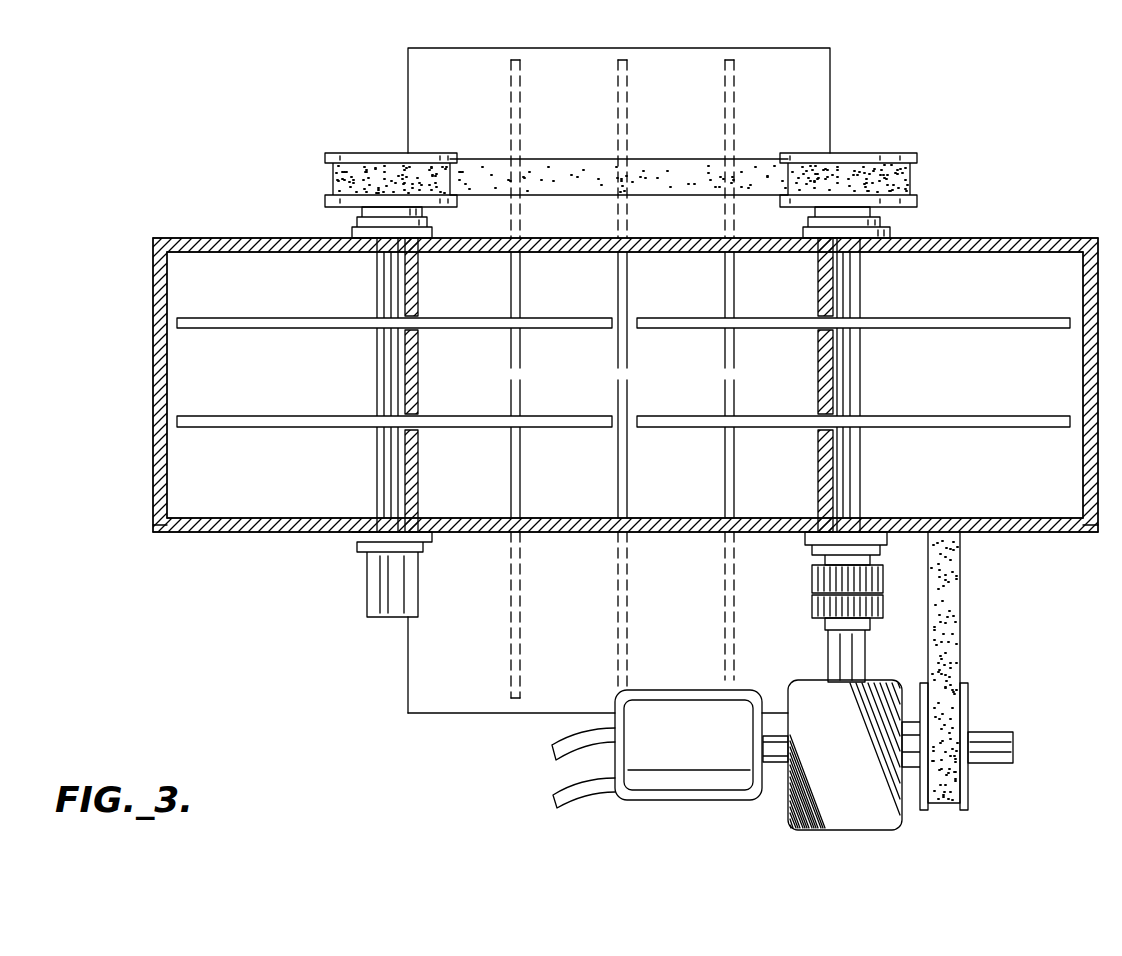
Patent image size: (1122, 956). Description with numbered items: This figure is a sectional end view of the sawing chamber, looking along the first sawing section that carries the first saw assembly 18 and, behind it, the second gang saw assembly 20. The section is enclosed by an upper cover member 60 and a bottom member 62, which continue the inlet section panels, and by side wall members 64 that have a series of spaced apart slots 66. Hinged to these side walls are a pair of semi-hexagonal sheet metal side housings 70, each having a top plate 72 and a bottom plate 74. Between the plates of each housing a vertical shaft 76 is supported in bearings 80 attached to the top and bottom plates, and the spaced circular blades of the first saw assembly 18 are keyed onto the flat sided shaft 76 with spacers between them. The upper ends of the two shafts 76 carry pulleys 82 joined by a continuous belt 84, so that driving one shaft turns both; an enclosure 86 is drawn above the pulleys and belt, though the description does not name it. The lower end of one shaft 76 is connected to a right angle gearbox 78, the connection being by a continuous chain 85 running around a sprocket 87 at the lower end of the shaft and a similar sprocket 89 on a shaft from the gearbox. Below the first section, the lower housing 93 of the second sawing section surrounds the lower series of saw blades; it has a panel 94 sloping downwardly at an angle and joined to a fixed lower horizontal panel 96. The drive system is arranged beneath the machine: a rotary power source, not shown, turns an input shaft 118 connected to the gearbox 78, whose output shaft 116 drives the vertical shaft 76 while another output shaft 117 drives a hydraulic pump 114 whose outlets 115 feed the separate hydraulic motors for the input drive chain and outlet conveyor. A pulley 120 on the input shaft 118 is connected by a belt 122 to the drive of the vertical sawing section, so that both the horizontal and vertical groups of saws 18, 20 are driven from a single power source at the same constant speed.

The first saw assembly 18 is at (995, 332).
The second gang saw assembly 20 is at (692, 372).
The upper cover member 60 is at (548, 253).
The bottom member 62 is at (540, 518).
The side wall members 64 is at (418, 470).
The slots 66 is at (418, 330).
The side housings 70 is at (626, 366).
The top plate 72 is at (1058, 238).
The bottom plate 74 is at (1062, 532).
The vertical shaft 76 is at (862, 375).
The right angle gearbox 78 is at (838, 830).
The bearings 80 is at (890, 232).
The pulleys 82 is at (878, 153).
The continuous belt 84 is at (645, 175).
The continuous chain 85 is at (881, 589).
The belt guard 86 is at (714, 48).
The sprocket 87 is at (812, 582).
The sprocket 89 is at (812, 610).
The lower housing 93 is at (400, 670).
The panel 94 is at (556, 677).
The lower horizontal panel 96 is at (455, 713).
The hydraulic pump 114 is at (650, 800).
The outlets 115 is at (548, 785).
The output shaft 116 is at (828, 668).
The output shaft 117 is at (778, 762).
The input shaft 118 is at (1000, 763).
The pulley 120 is at (968, 702).
The belt 122 is at (945, 618).